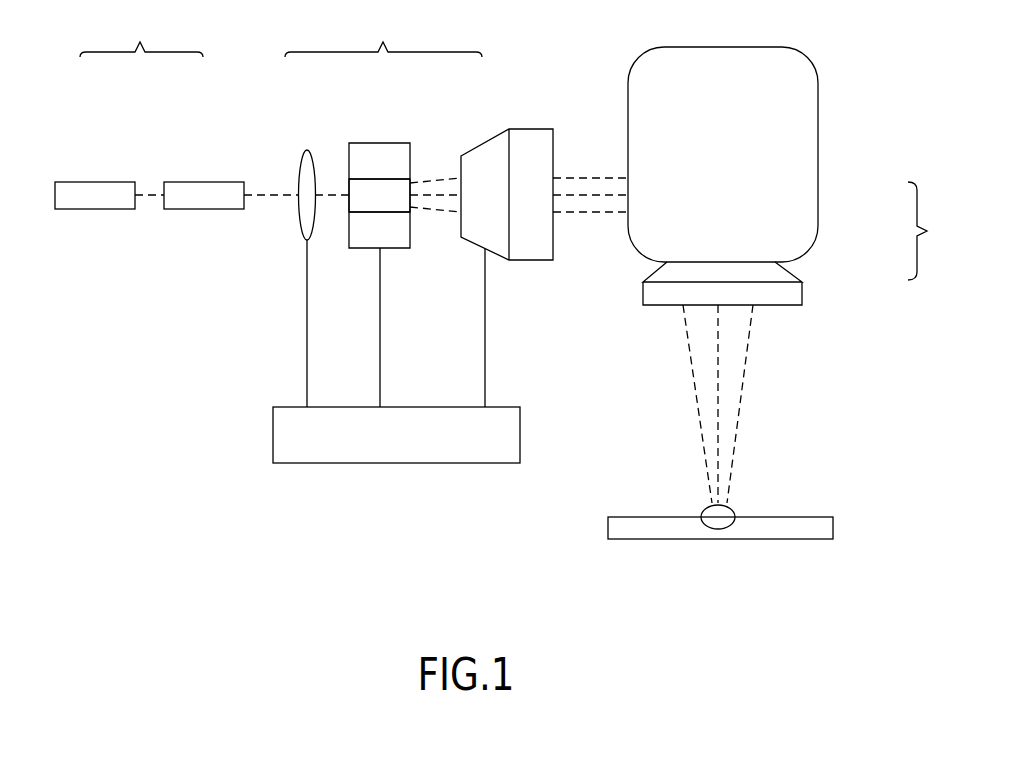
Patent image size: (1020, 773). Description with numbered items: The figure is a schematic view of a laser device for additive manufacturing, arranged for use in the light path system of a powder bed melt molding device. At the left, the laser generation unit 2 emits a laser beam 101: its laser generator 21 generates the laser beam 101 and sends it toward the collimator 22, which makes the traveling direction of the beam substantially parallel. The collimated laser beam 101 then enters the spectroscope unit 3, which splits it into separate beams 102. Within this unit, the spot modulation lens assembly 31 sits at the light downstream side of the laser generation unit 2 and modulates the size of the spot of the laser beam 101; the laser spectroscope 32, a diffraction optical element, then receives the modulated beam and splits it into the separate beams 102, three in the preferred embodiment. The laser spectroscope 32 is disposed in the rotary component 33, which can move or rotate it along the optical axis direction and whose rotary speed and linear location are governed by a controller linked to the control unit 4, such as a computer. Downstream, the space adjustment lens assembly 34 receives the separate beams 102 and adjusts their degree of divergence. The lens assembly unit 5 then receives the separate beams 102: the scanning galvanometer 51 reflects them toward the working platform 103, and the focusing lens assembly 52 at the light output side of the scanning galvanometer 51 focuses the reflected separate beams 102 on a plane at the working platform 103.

The laser generation unit 2 is at (141, 34).
The laser generator 21 is at (92, 182).
The collimator 22 is at (202, 182).
The spectroscope unit 3 is at (383, 34).
The spot modulation lens assembly 31 is at (306, 150).
The laser spectroscope 32 is at (358, 178).
The rotary component 33 is at (398, 143).
The space adjustment lens assembly 34 is at (470, 156).
The control unit 4 is at (290, 407).
The lens assembly unit 5 is at (926, 231).
The scanning galvanometer 51 is at (818, 190).
The focusing lens assembly 52 is at (802, 292).
The laser beam 101 is at (340, 262).
The separate beams 102 is at (808, 385).
The working platform 103 is at (750, 517).